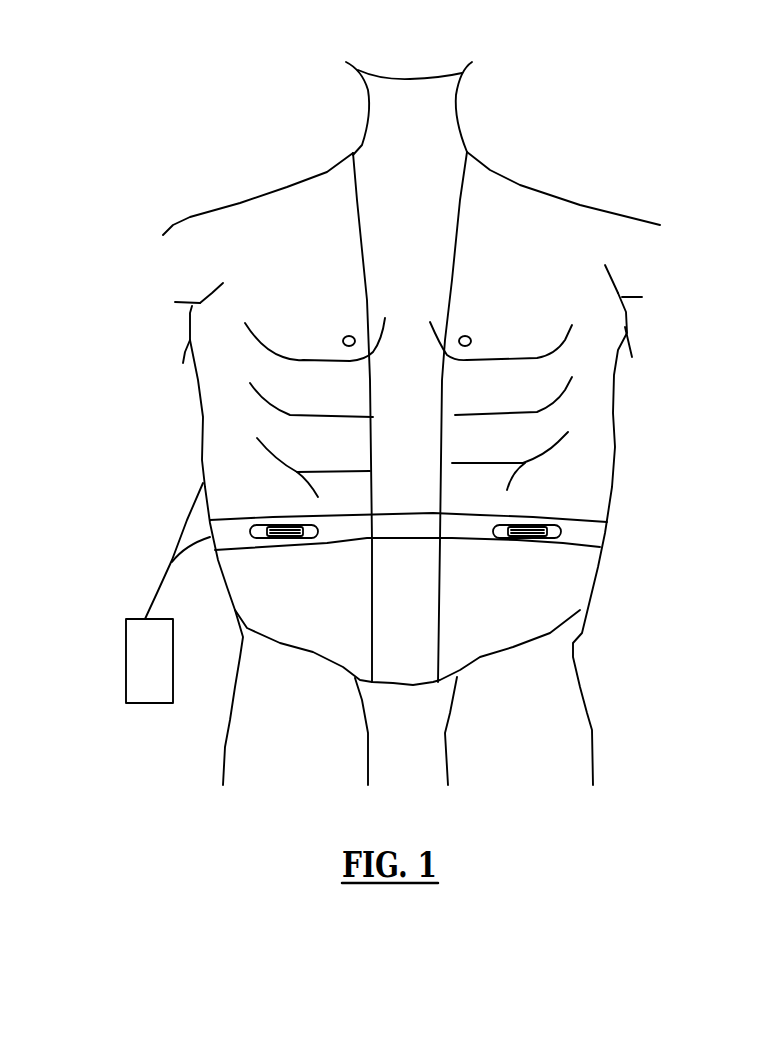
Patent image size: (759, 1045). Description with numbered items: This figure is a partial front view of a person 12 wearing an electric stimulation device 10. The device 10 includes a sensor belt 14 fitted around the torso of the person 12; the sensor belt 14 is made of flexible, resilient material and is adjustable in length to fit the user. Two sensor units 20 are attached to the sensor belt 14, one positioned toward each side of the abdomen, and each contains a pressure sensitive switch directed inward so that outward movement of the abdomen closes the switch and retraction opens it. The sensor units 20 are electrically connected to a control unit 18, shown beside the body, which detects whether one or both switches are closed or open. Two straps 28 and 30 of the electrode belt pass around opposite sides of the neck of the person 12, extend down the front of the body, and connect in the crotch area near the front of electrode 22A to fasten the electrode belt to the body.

The electric stimulation device 10 is at (175, 717).
The person 12 is at (547, 194).
The sensor belt 14 is at (565, 548).
The control unit 18 is at (122, 637).
The sensor unit 20 is at (262, 540).
The first electrode 22A is at (374, 452).
The strap 28 is at (465, 200).
The strap 30 is at (355, 200).